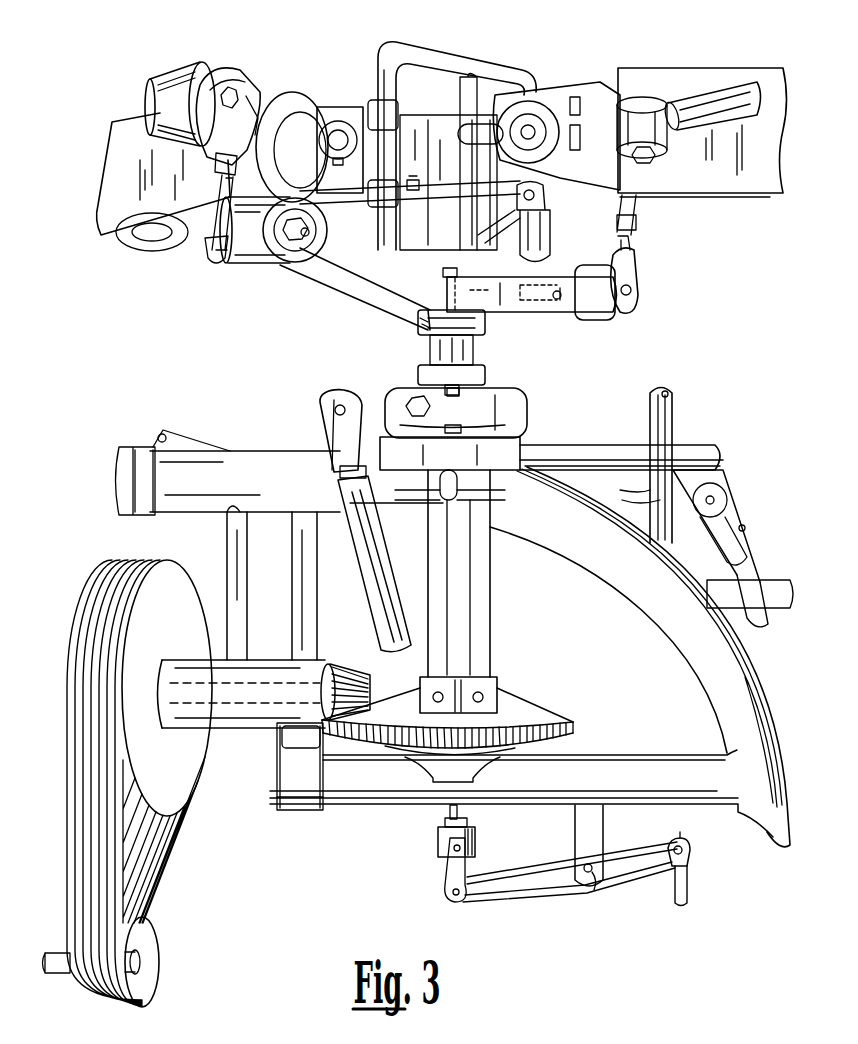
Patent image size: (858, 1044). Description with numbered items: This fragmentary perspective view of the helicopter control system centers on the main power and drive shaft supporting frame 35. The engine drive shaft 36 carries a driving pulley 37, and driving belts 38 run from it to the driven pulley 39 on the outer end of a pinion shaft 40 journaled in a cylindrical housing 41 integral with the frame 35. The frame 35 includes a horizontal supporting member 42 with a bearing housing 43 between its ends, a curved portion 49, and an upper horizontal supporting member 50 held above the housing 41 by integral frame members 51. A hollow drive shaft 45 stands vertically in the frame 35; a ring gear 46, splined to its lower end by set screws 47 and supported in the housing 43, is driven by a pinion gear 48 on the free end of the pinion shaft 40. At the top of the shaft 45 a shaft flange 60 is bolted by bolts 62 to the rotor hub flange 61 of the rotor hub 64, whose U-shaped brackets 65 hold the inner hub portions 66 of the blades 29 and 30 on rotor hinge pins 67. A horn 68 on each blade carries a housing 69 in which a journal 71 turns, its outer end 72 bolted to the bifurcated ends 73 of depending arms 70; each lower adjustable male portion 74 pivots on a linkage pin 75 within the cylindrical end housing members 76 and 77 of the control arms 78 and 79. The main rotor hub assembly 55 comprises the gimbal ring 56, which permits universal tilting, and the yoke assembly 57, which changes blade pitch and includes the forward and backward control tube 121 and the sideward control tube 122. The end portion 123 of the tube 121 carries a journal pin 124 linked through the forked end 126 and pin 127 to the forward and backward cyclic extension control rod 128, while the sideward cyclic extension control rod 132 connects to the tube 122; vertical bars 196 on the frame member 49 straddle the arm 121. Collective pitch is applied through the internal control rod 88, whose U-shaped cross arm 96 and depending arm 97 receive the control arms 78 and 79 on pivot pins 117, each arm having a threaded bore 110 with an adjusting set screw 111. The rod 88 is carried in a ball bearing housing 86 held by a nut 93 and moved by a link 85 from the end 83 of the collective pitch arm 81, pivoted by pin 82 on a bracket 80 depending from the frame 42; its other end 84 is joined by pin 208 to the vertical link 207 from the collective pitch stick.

The rotor blade 29 is at (128, 114).
The rotor blade 30 is at (720, 70).
The main power and drive shaft supporting frame 35 is at (676, 620).
The engine drive shaft 36 is at (60, 966).
The driving pulley 37 is at (156, 987).
The driving belts 38 is at (180, 880).
The driven pulley 39 is at (153, 770).
The pinion shaft 40 is at (229, 726).
The cylindrical housing 41 is at (254, 724).
The horizontal supporting member 42 is at (644, 790).
The bearing housing 43 is at (440, 770).
The hollow drive shaft 45 is at (488, 638).
The ring gear 46 is at (545, 712).
The set screws 47 is at (482, 697).
The pinion gear 48 is at (372, 690).
The curved portion 49 is at (593, 562).
The upper horizontal supporting member 50 is at (278, 470).
The integral frame members 51 is at (294, 628).
The main rotor hub assembly 55 is at (536, 443).
The gimbal ring 56 is at (507, 400).
The yoke assembly 57 is at (389, 468).
The shaft flange 60 is at (432, 203).
The rotor hub flange 61 is at (456, 193).
The bolts 62 is at (412, 180).
The rotor hub 64 is at (420, 127).
The U-shaped brackets 65 is at (508, 100).
The inner hub portions 66 is at (350, 125).
The rotor hinge pins 67 is at (333, 130).
The horn 68 is at (264, 104).
The housing 69 is at (190, 66).
The arms 70 is at (222, 125).
The journal 71 is at (222, 73).
The outer end 72 is at (250, 95).
The upper bifurcated ends 73 is at (223, 120).
The lower adjustable male portion 74 is at (205, 256).
The linkage pin 75 is at (297, 262).
The cylindrical end housing member 76 is at (257, 264).
The cylindrical end housing member 77 is at (605, 320).
The control arm 78 is at (337, 254).
The control arm 79 is at (567, 305).
The bracket 80 is at (602, 830).
The collective pitch arm 81 is at (560, 882).
The pin 82 is at (592, 880).
The end 83 is at (490, 888).
The end 84 is at (666, 866).
The link 85 is at (452, 874).
The ball bearing housing 86 is at (440, 842).
The internal control rod 88 is at (449, 812).
The nut 93 is at (468, 825).
The U-shaped cross arm 96 is at (445, 68).
The depending arm 97 is at (372, 63).
The bore 110 is at (486, 288).
The threaded adjusting set screw 111 is at (462, 272).
The pivot pin 117 is at (554, 308).
The forward and backward control tube 121 is at (598, 443).
The sideward control tube 122 is at (420, 396).
The downwardly extending end portion 123 is at (727, 486).
The journal pin 124 is at (714, 500).
The upper forked end 126 is at (728, 545).
The pin 127 is at (746, 529).
The forward and backward cyclic extension control rod 128 is at (760, 574).
The sideward cyclic extension control rod 132 is at (396, 560).
The vertical bars 196 is at (623, 487).
The vertical link 207 is at (688, 892).
The pin 208 is at (690, 854).